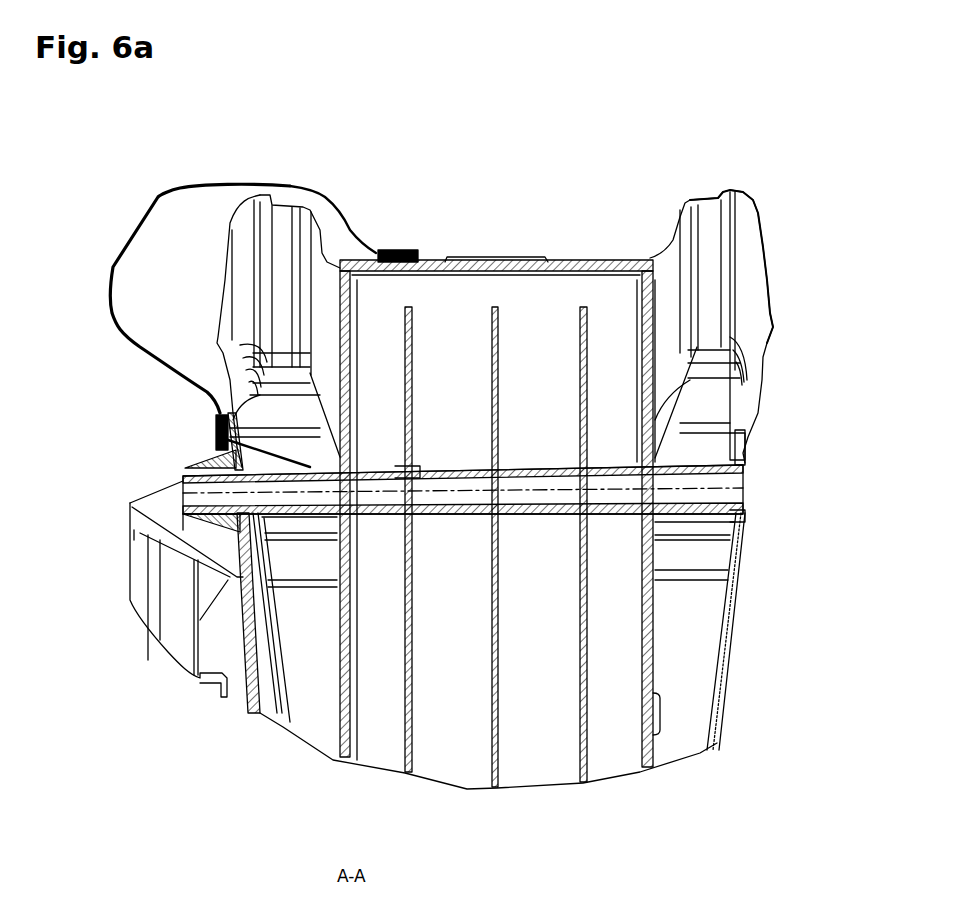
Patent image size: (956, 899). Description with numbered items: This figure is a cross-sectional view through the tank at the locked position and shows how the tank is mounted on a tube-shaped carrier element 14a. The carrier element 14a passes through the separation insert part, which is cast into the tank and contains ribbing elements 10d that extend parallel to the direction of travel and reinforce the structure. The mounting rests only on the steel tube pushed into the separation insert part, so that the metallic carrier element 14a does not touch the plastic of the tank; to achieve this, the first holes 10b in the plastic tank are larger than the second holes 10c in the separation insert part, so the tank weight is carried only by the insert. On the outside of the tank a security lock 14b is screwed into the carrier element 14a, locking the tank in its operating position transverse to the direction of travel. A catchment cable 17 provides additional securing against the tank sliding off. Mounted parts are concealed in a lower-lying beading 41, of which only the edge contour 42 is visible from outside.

The catchment cable 17 is at (123, 248).
The beading 41 is at (572, 250).
The edge contour 42 is at (742, 195).
The ribbing elements 10d is at (582, 347).
The first holes 10b is at (216, 430).
The second holes 10c is at (408, 466).
The carrier element 14a is at (740, 490).
The security lock 14b is at (742, 465).